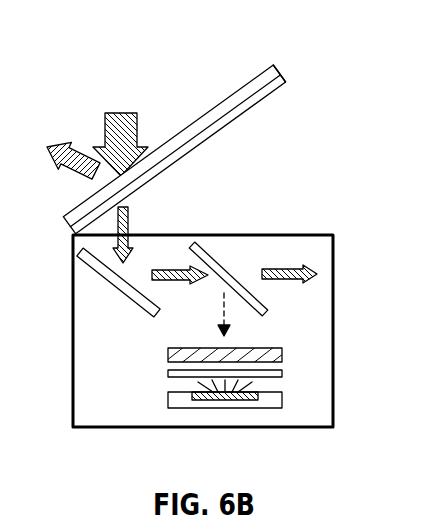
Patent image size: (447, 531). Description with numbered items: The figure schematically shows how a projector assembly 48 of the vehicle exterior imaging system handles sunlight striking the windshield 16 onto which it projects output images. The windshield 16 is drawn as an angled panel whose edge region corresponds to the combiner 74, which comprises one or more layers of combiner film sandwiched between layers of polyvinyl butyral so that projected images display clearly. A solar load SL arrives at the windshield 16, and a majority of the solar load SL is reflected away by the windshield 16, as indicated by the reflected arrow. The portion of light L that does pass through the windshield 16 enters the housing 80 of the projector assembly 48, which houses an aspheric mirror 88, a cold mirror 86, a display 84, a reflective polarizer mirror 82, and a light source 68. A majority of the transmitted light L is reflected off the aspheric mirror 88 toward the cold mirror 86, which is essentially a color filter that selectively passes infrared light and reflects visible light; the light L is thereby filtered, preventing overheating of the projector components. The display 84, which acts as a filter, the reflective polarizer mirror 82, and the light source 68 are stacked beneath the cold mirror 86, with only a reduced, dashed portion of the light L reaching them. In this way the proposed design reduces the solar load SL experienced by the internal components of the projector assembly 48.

The windshield 16 is at (233, 88).
The combiner 74 is at (272, 70).
The projector assembly 48 is at (247, 332).
The housing 80 is at (337, 293).
The aspheric mirror 88 is at (118, 300).
The cold mirror 86 is at (215, 270).
The display 84 is at (283, 353).
The reflective polarizer mirror 82 is at (283, 373).
The light source 68 is at (268, 398).
The solar load SL is at (118, 123).
The light L is at (128, 223).